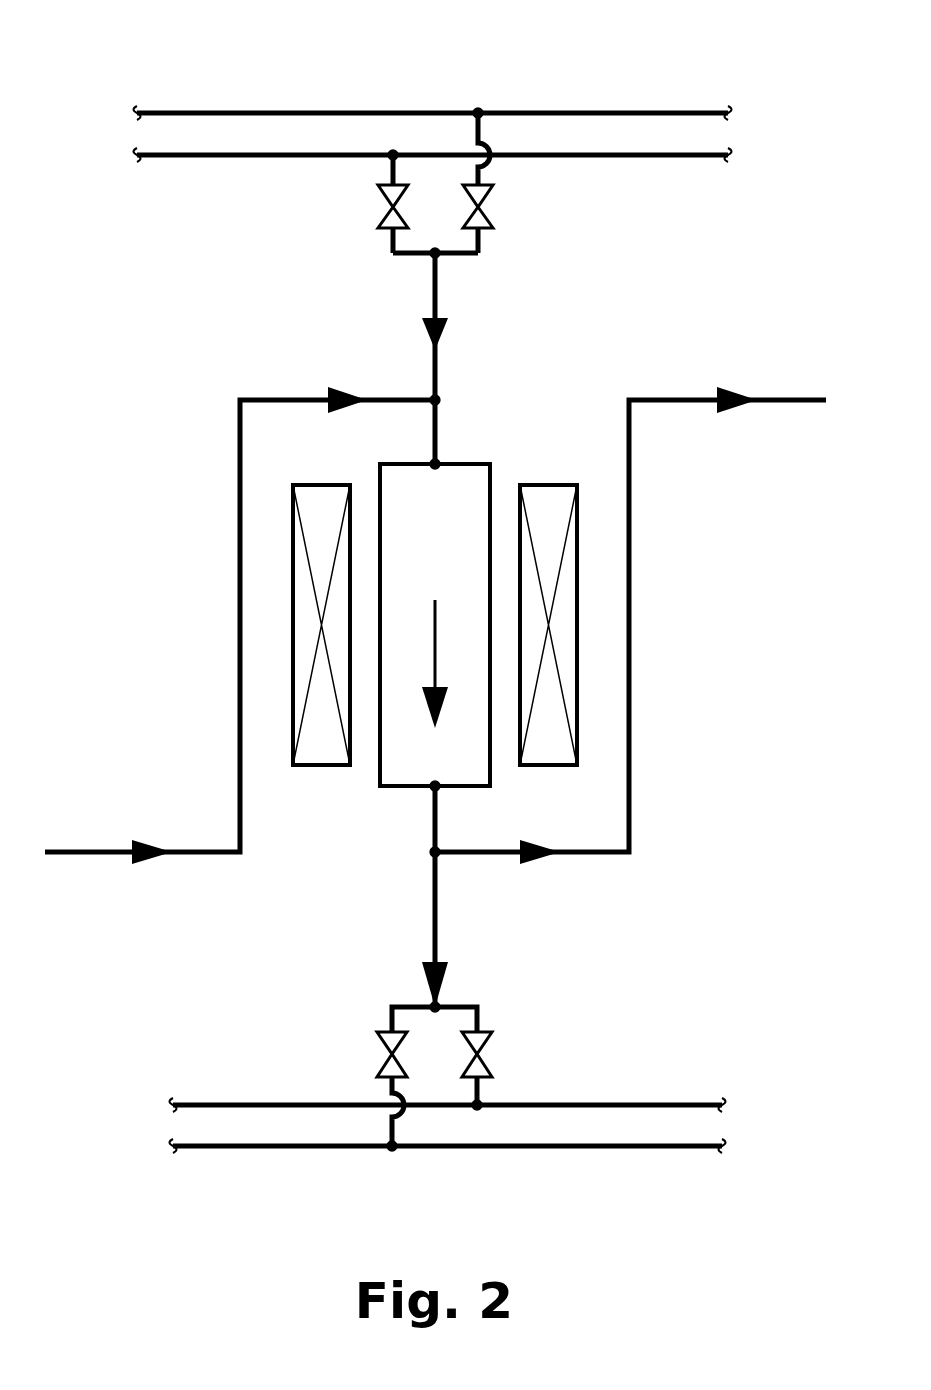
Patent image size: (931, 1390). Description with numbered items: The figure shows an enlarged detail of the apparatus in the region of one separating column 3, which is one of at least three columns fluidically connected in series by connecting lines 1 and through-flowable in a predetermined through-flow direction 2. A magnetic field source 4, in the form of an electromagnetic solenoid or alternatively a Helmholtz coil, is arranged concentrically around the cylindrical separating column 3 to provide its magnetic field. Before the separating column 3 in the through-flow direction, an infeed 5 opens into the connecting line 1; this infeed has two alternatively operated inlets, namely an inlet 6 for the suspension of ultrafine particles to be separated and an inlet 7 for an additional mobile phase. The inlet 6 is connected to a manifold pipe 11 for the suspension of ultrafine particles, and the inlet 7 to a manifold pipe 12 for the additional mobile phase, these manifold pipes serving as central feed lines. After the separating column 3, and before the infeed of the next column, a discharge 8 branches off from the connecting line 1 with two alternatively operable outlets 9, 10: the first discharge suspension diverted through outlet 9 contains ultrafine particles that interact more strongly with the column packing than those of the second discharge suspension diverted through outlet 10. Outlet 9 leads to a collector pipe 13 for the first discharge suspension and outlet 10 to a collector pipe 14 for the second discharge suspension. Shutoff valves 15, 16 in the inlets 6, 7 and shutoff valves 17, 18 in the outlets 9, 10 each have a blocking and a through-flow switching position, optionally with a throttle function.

The connecting line 1 is at (238, 602).
The through-flow direction 2 is at (433, 643).
The separating column 3 is at (438, 515).
The magnetic field source 4 is at (320, 510).
The infeed 5 is at (432, 283).
The inlet for suspension of ultrafine particles 6 is at (480, 247).
The inlet for additional mobile phase 7 is at (393, 242).
The discharge 8 is at (432, 938).
The outlet for first discharge suspension 9 is at (392, 1015).
The outlet for second discharge suspension 10 is at (480, 1020).
The manifold pipe for suspension of ultrafine particles 11 is at (643, 110).
The manifold pipe for additional mobile phase 12 is at (652, 157).
The collector pipe for first discharge suspension 13 is at (220, 1103).
The collector pipe for second discharge suspension 14 is at (256, 1150).
The shutoff valve 15 is at (480, 192).
The shutoff valve 16 is at (390, 197).
The shutoff valve 17 is at (390, 1070).
The shutoff valve 18 is at (475, 1072).